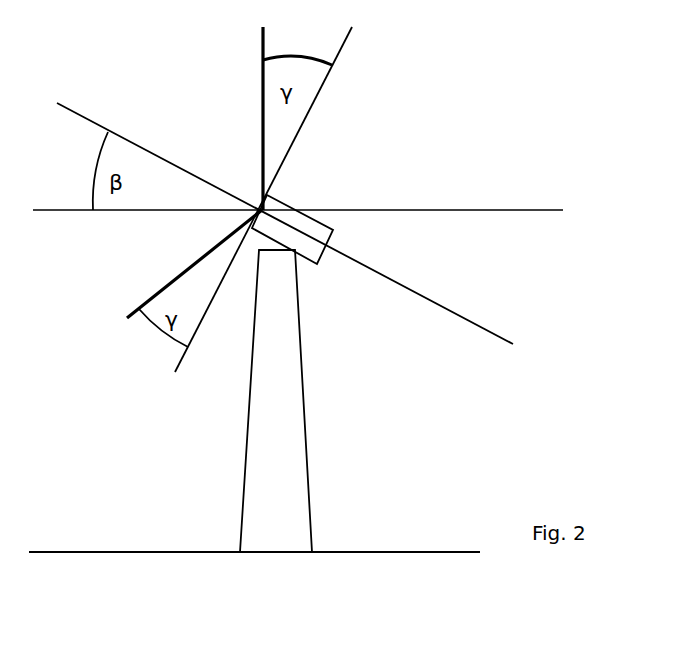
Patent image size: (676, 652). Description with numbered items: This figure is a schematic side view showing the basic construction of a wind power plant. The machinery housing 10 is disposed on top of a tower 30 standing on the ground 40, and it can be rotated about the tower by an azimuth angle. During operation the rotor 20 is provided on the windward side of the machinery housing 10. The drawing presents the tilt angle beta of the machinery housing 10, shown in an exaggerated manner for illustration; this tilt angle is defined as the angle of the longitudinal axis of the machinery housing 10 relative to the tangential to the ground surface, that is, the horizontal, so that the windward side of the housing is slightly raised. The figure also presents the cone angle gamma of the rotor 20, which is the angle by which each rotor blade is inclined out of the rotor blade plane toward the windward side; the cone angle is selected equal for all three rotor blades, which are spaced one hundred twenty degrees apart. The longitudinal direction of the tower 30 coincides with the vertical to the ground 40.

The machinery housing 10 is at (287, 205).
The rotor 20 is at (262, 108).
The tower 30 is at (305, 417).
The ground 40 is at (345, 552).